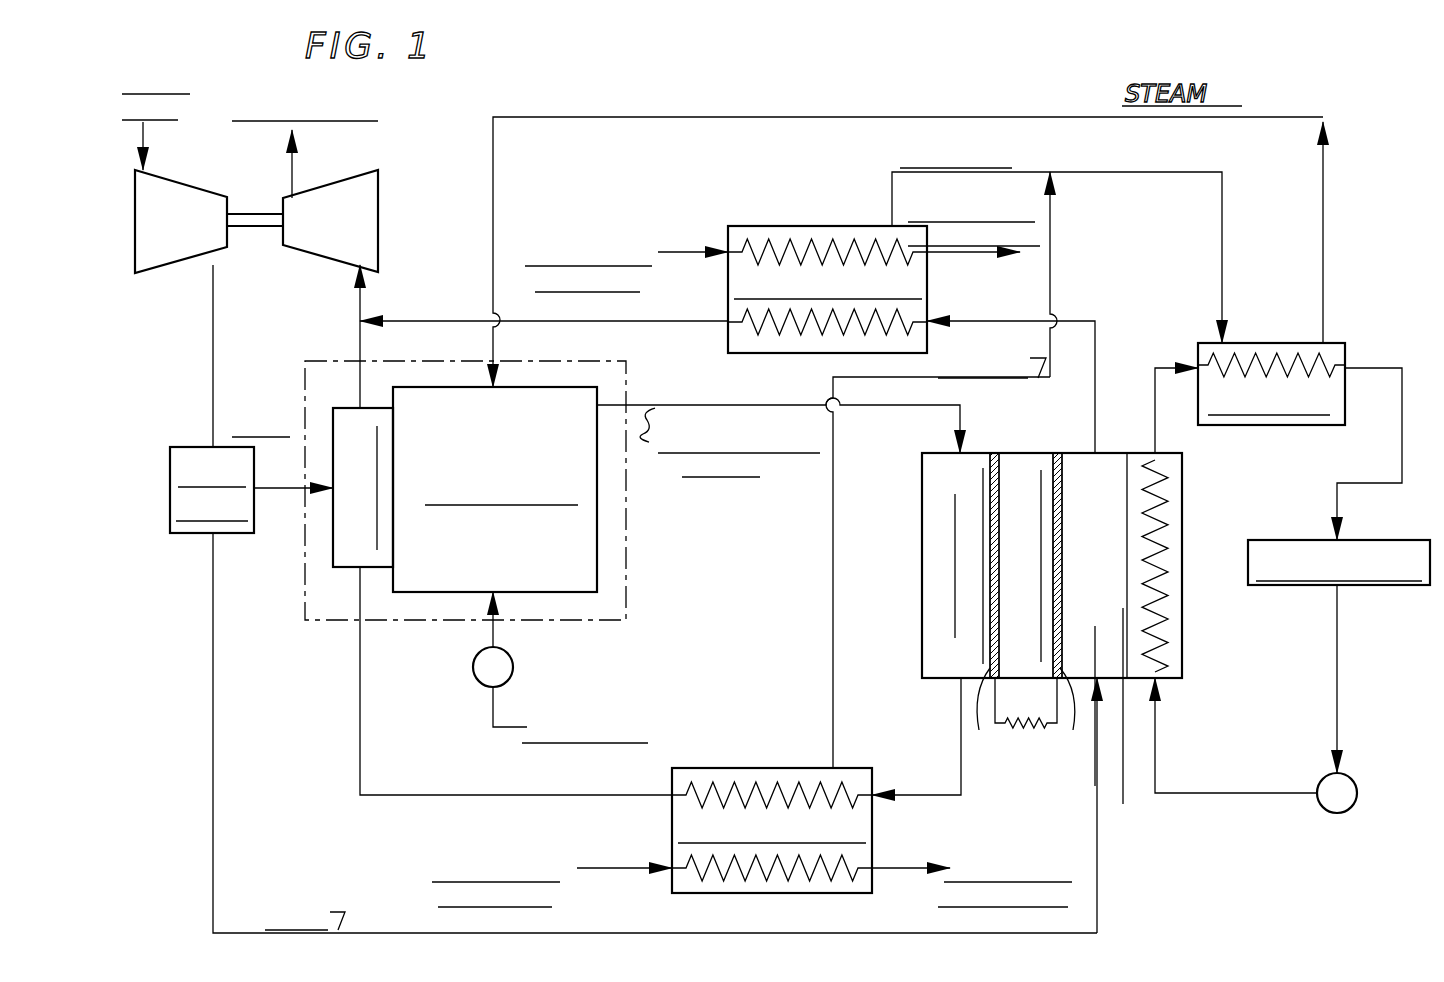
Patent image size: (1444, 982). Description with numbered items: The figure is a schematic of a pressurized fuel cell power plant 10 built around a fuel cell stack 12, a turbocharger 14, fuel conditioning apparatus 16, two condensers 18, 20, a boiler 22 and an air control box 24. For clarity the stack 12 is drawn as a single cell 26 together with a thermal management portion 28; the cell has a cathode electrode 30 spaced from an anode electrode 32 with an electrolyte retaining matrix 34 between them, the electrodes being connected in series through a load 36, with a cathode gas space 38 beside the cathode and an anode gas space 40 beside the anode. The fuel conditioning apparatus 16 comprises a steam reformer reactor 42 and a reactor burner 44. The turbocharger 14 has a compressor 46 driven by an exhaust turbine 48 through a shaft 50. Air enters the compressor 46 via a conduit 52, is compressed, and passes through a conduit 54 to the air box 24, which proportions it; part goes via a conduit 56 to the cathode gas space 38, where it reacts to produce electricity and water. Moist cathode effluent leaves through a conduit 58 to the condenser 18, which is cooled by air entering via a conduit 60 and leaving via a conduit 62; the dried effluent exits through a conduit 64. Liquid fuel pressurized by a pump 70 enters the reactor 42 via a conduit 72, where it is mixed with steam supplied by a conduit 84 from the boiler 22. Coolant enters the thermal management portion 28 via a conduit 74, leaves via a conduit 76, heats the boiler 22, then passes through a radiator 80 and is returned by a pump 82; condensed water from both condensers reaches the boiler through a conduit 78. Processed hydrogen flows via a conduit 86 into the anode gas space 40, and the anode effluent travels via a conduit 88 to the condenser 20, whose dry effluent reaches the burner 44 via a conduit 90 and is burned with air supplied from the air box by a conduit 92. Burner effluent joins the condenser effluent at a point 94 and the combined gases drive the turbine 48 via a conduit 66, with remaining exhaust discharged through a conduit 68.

The power plant 10 is at (912, 90).
The fuel cell stack 12 is at (1074, 605).
The turbocharger 14 is at (289, 194).
The fuel conditioning apparatus 16 is at (511, 490).
The condenser 18 is at (760, 228).
The condenser 20 is at (722, 768).
The boiler 22 is at (1334, 352).
The air control box 24 is at (178, 447).
The fuel cell 26 is at (1035, 452).
The thermal management portion 28 is at (1178, 672).
The cathode electrode 30 is at (1073, 612).
The anode electrode 32 is at (991, 722).
The electrolyte retaining matrix 34 is at (1010, 462).
The load 36 is at (1038, 732).
The cathode gas space 38 is at (1104, 462).
The anode gas space 40 is at (930, 478).
The steam reformer reactor 42 is at (495, 489).
The reactor burner 44 is at (340, 418).
The compressor 46 is at (181, 221).
The exhaust turbine 48 is at (330, 221).
The shaft 50 is at (246, 213).
The conduit 52 is at (146, 144).
The conduit 54 is at (212, 300).
The conduit 56 is at (213, 600).
The conduit 58 is at (1080, 320).
The conduit 60 is at (674, 250).
The conduit 62 is at (976, 252).
The conduit 64 is at (690, 313).
The conduit 66 is at (364, 306).
The conduit 68 is at (294, 168).
The pump 70 is at (478, 682).
The conduit 72 is at (487, 632).
The conduit 74 is at (1253, 793).
The conduit 76 is at (1166, 368).
The conduit 78 is at (1084, 174).
The radiator 80 is at (1372, 548).
The pump 82 is at (1358, 786).
The conduit 84 is at (707, 117).
The conduit 86 is at (755, 405).
The conduit 88 is at (916, 795).
The conduit 90 is at (360, 692).
The conduit 92 is at (298, 460).
The point 94 is at (350, 324).